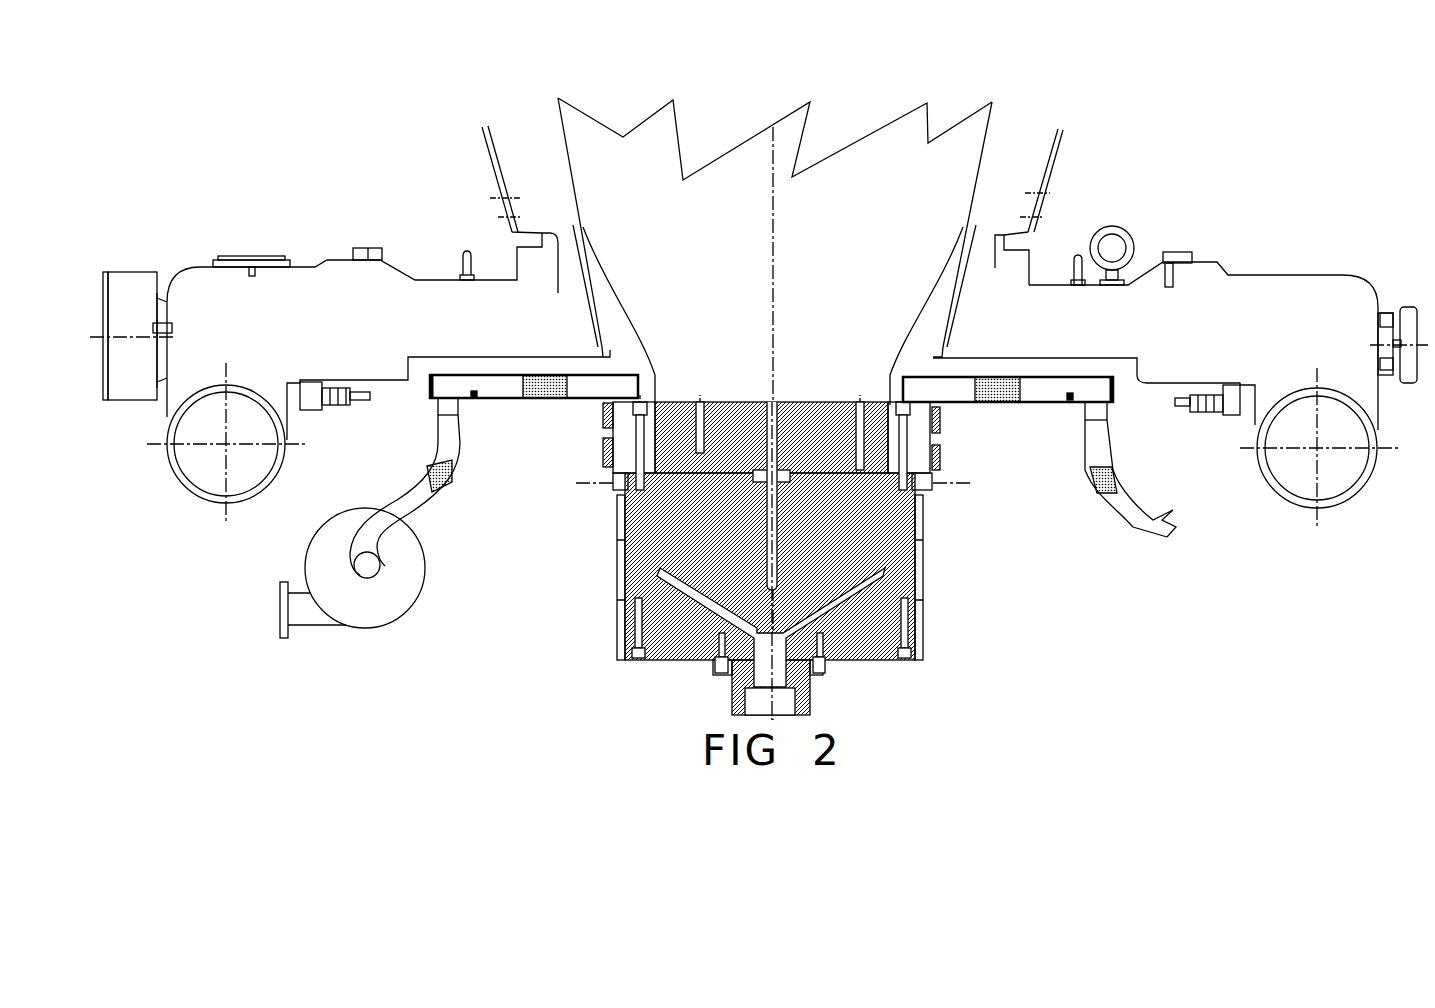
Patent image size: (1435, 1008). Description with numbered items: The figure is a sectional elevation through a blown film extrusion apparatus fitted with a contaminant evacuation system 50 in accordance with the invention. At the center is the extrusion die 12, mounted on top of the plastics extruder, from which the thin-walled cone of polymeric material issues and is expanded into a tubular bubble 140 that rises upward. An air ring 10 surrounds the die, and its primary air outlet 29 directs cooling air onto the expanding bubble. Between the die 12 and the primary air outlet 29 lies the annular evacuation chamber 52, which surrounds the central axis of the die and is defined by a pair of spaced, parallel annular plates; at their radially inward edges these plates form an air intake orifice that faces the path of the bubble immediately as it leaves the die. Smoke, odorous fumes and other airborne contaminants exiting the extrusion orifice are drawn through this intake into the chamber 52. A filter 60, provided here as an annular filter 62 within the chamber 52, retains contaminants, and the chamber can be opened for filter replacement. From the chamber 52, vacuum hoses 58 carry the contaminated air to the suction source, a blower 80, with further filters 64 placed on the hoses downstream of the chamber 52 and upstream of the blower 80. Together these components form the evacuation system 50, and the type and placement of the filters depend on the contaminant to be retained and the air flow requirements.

The air ring 10 is at (430, 277).
The extrusion die 12 is at (655, 515).
The primary air outlet 29 is at (940, 343).
The contaminant evacuation system 50 is at (960, 408).
The annular evacuation chamber 52 is at (1033, 392).
The vacuum hoses 58 is at (432, 440).
The filter 60 is at (458, 370).
The annular filter 62 is at (547, 400).
The further filters 64 is at (452, 480).
The blower 80 is at (398, 623).
The hopper 140 is at (928, 157).